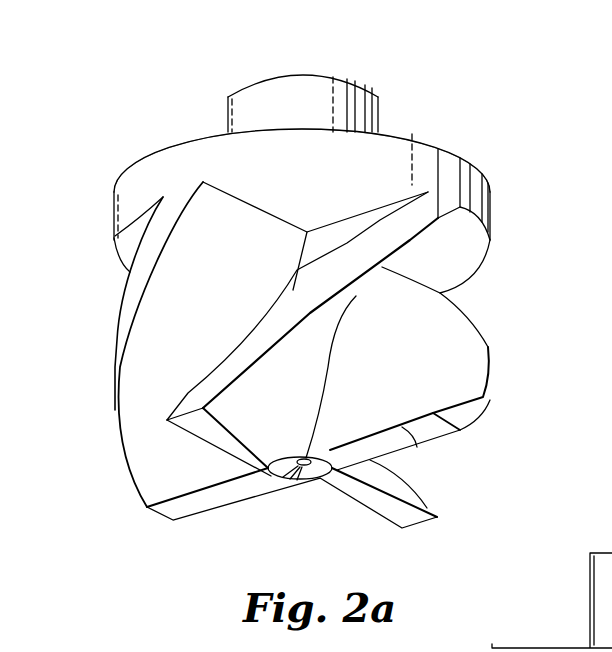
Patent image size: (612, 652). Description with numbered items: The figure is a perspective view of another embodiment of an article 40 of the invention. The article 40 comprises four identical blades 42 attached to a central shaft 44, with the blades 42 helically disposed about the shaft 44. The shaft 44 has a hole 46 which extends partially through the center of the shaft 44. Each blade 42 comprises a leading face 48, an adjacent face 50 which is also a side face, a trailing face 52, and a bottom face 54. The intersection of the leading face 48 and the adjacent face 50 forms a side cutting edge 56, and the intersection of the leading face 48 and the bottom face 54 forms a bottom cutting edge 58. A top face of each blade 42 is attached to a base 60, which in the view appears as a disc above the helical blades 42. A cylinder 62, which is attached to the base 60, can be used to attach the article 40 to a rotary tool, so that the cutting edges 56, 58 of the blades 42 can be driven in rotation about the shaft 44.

The article 40 is at (474, 129).
The blade 42 is at (456, 313).
The central shaft 44 is at (325, 478).
The hole 46 is at (301, 465).
The leading face 48 is at (363, 223).
The adjacent face 50 is at (195, 390).
The trailing face 52 is at (153, 303).
The bottom face 54 is at (233, 448).
The side cutting edge 56 is at (323, 265).
The bottom cutting edge 58 is at (415, 447).
The base 60 is at (203, 157).
The cylinder 62 is at (278, 92).